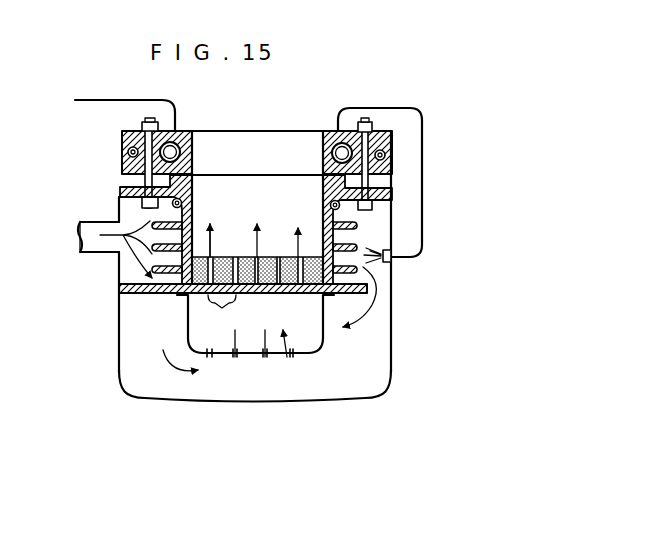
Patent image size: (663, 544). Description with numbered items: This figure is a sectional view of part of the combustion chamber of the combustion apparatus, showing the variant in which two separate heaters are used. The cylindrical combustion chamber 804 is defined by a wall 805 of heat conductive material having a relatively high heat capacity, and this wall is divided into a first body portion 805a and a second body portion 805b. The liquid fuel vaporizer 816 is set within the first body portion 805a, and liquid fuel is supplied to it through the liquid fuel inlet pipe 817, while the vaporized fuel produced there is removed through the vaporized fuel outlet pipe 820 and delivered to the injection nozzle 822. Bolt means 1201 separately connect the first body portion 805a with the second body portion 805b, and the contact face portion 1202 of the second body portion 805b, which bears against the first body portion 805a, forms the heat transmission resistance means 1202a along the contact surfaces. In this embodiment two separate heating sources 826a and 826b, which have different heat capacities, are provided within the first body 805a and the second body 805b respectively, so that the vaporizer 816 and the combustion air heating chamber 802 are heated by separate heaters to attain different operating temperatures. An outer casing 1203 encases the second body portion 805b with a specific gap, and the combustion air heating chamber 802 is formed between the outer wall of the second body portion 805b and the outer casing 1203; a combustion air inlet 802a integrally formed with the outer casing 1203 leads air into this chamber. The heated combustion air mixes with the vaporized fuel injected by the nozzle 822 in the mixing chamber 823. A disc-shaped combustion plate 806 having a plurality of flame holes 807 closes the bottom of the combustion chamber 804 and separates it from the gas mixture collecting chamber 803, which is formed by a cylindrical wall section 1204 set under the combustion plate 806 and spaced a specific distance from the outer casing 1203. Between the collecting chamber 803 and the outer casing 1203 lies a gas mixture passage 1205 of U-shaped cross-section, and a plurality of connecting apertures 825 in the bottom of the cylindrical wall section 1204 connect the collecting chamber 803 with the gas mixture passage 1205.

The liquid fuel inlet pipe 817 is at (144, 99).
The bolt means 1201 is at (145, 122).
The heating source 826a is at (130, 150).
The first body portion 805a is at (122, 163).
The combustion air heating chamber 802 is at (120, 208).
The combustion air inlet 802a is at (93, 253).
The liquid fuel vaporizer 816 is at (197, 138).
The combustion chamber 804 is at (262, 180).
The wall 805 is at (341, 143).
The contact face portion 1202 is at (367, 120).
The vaporized fuel outlet pipe 820 is at (392, 155).
The heat transmission resistance means 1202a is at (192, 190).
The heating source 826b is at (181, 204).
The second body portion 805b is at (237, 240).
The injection nozzle 822 is at (392, 253).
The mixing chamber 823 is at (380, 282).
The flame holes 807 is at (357, 313).
The cylindrical wall section 1204 is at (187, 320).
The combustion plate 806 is at (268, 282).
The gas mixture collecting chamber 803 is at (323, 340).
The outer casing 1203 is at (391, 355).
The connecting apertures 825 is at (293, 358).
The gas mixture passage 1205 is at (253, 402).